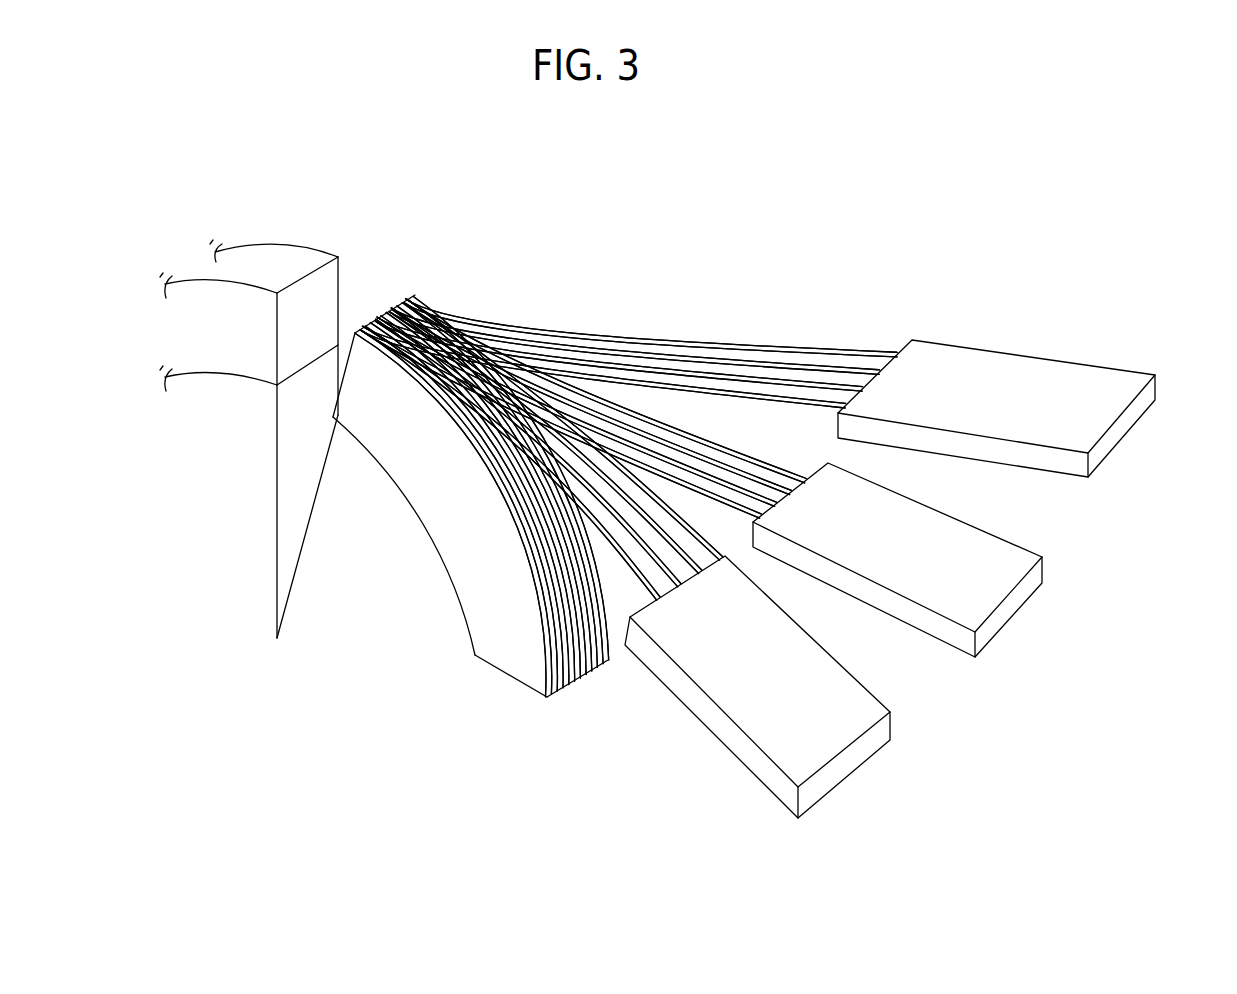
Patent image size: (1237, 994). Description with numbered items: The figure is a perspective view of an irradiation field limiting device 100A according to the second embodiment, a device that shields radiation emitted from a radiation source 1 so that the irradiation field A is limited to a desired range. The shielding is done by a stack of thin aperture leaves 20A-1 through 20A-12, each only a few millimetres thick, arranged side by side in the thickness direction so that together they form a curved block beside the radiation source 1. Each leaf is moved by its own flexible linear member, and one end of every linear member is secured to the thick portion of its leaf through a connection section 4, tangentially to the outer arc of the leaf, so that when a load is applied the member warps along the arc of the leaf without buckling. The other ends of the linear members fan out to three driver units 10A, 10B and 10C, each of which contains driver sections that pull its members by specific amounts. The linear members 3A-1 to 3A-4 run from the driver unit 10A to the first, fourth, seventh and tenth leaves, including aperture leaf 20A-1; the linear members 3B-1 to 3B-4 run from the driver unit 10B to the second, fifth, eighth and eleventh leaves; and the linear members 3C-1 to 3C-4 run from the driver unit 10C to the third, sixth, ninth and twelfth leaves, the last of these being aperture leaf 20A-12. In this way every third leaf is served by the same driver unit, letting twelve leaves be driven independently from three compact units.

The irradiation field limiting device 100A is at (613, 214).
The irradiation field A is at (357, 267).
The radiation source 1 is at (276, 638).
The connection section 4 is at (381, 317).
The aperture leaf 20A-1 is at (561, 710).
The aperture leaf 20A-12 is at (482, 497).
The linear member 3A-1 is at (646, 507).
The linear member 3A-4 is at (541, 449).
The linear member 3B-1 is at (718, 425).
The linear member 3B-4 is at (583, 408).
The linear member 3C-1 is at (733, 330).
The linear member 3C-4 is at (629, 353).
The driver unit 10A is at (864, 788).
The driver unit 10B is at (1026, 628).
The driver unit 10C is at (1134, 449).